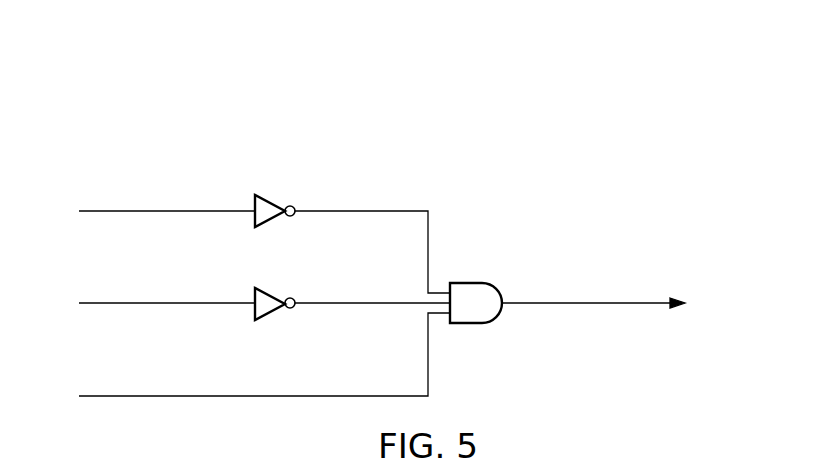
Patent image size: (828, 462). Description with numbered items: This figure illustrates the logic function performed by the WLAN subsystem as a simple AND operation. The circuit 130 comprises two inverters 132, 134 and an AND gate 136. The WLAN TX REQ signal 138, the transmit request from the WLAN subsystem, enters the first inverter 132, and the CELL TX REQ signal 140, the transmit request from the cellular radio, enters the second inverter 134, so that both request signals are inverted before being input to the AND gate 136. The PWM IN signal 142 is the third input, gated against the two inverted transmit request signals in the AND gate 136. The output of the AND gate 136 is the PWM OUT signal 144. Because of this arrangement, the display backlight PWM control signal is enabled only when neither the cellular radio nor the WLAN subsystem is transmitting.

The circuit 130 is at (465, 160).
The inverter 132 is at (273, 196).
The inverter 134 is at (273, 288).
The AND gate 136 is at (478, 324).
The WLAN TX REQ signal 138 is at (167, 212).
The CELL TX REQ signal 140 is at (167, 304).
The PWM IN signal 142 is at (167, 397).
The PWM OUT output 144 is at (590, 304).